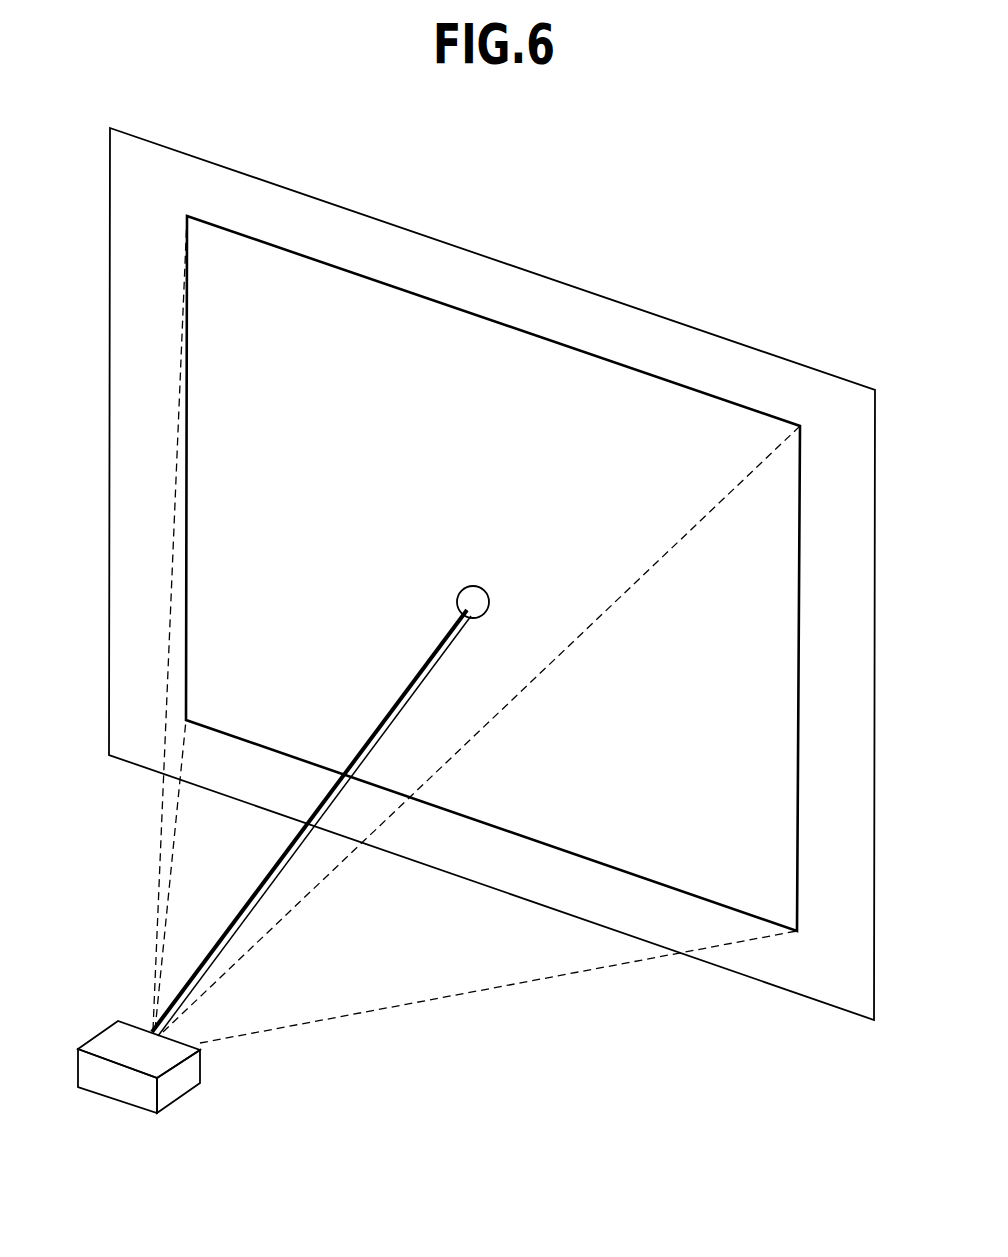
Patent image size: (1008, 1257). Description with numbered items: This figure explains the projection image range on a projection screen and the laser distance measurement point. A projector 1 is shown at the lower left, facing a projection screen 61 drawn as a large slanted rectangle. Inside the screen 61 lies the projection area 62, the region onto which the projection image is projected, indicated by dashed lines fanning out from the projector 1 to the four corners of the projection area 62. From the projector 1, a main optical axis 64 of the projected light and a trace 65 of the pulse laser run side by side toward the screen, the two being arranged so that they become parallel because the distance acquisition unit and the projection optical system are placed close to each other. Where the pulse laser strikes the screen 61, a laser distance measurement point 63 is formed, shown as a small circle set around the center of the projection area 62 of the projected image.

The projector 1 is at (107, 1098).
The projection screen 61 is at (685, 325).
The projection area 62 is at (447, 305).
The laser distance measurement point 63 is at (472, 586).
The main optical axis 64 is at (270, 887).
The trace of the pulse laser 65 is at (228, 921).